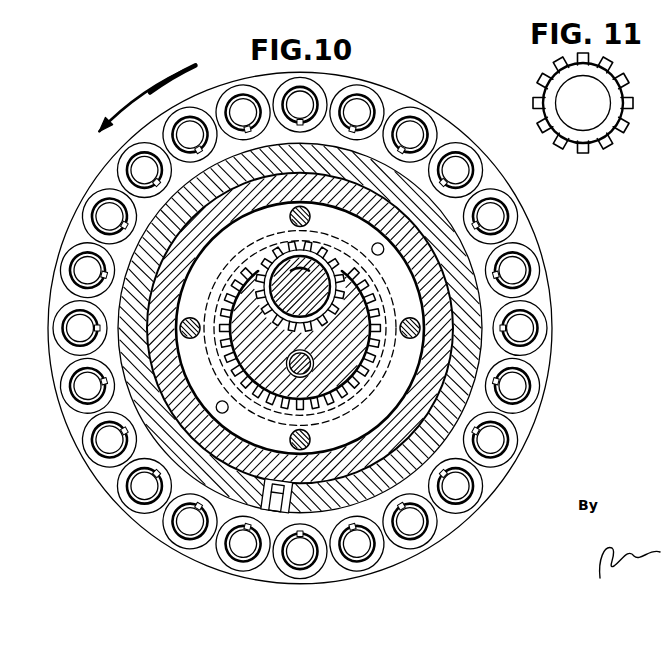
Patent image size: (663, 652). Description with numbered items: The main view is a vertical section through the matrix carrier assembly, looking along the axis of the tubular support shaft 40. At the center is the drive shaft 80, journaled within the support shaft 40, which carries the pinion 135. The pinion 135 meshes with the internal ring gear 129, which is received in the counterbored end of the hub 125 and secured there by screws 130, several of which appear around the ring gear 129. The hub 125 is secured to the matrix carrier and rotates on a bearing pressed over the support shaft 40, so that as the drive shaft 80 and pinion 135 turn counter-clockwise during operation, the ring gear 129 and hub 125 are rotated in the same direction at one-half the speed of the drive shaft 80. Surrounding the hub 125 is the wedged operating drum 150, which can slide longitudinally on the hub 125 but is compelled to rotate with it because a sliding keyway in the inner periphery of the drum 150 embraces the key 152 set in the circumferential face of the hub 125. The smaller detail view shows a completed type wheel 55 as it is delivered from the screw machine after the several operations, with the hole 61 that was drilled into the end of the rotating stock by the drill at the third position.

In FIG. 10, the tubular support shaft 40 is at (286, 339).
In FIG. 10, the drive shaft 80 is at (331, 273).
In FIG. 10, the pinion 135 is at (313, 273).
In FIG. 10, the hub 125 is at (300, 328).
In FIG. 10, the ring gear 129 is at (386, 328).
In FIG. 10, the screws 130 is at (304, 328).
In FIG. 10, the operating drum 150 is at (355, 327).
In FIG. 10, the key 152 is at (250, 537).
In FIG. 11, the type wheel 55 is at (568, 103).
In FIG. 11, the hole 61 is at (560, 80).